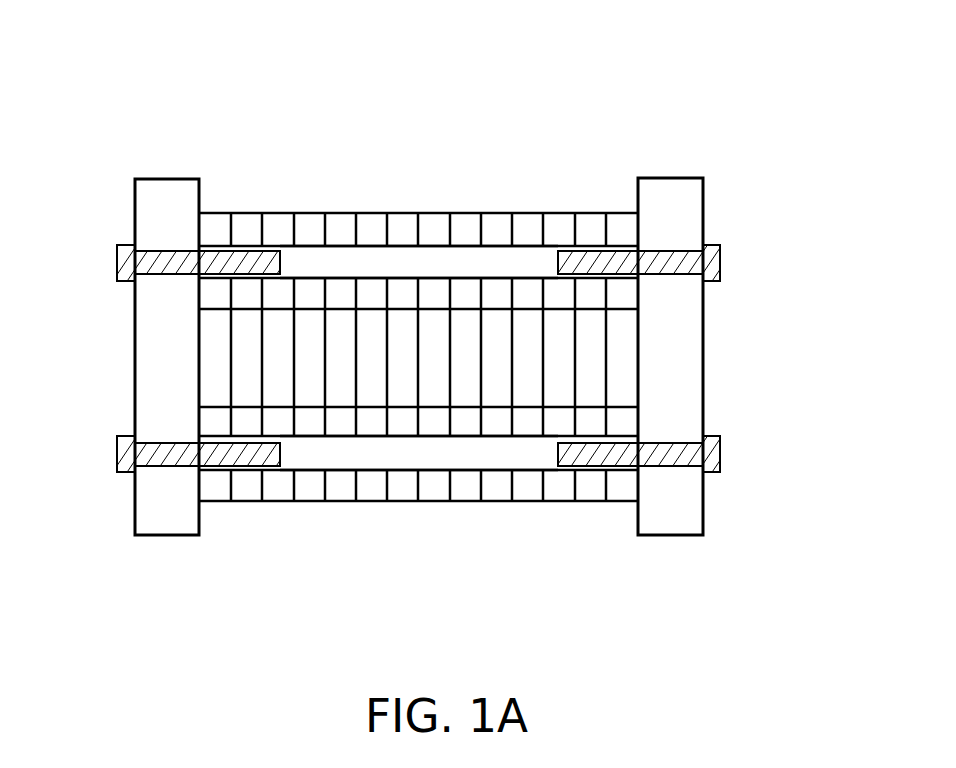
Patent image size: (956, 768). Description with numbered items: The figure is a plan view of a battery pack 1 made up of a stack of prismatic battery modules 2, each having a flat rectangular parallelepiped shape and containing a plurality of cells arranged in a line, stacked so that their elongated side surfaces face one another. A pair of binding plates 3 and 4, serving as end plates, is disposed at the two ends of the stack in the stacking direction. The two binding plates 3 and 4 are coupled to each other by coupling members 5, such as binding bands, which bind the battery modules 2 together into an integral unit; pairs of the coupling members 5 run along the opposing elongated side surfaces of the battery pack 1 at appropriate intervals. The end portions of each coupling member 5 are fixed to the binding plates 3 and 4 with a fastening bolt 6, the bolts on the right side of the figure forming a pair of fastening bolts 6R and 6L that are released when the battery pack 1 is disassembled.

The battery pack 1 is at (565, 120).
The battery module 2 is at (562, 483).
The binding plate 3 is at (682, 213).
The binding plate 4 is at (160, 210).
The coupling member 5 is at (367, 262).
The fastening bolt 6 is at (710, 260).
The fastening bolt 6R is at (643, 360).
The fastening bolt 6L is at (203, 360).